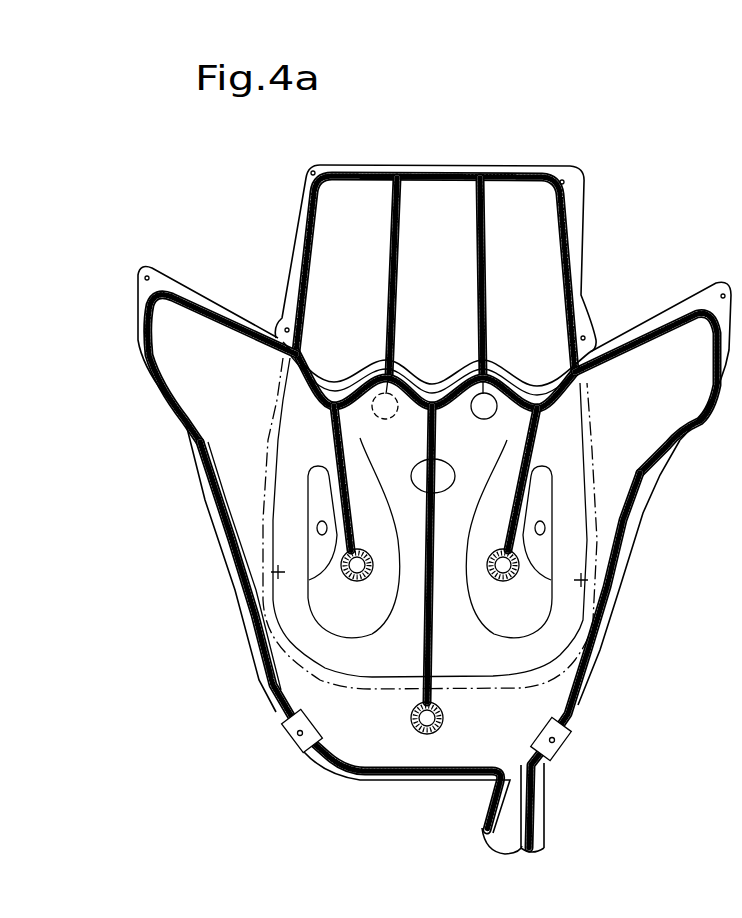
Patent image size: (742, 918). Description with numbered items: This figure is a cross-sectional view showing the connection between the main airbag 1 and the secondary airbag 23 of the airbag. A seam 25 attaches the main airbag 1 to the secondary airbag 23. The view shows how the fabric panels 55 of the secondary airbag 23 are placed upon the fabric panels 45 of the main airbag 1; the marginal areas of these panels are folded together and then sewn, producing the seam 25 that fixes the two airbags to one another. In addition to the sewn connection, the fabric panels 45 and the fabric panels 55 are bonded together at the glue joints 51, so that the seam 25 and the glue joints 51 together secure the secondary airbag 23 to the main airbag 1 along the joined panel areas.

The main airbag 1 is at (443, 198).
The fabric panels 45 is at (353, 203).
The seam 25 is at (227, 317).
The fabric panels 55 is at (227, 460).
The secondary airbag 23 is at (243, 492).
The glue joints 51 is at (378, 630).